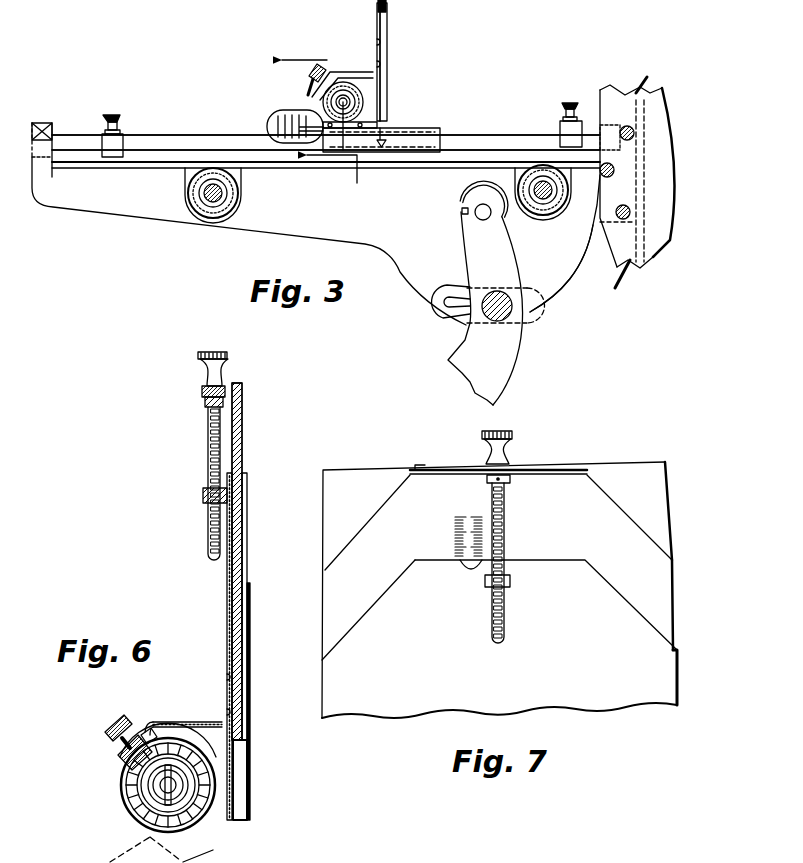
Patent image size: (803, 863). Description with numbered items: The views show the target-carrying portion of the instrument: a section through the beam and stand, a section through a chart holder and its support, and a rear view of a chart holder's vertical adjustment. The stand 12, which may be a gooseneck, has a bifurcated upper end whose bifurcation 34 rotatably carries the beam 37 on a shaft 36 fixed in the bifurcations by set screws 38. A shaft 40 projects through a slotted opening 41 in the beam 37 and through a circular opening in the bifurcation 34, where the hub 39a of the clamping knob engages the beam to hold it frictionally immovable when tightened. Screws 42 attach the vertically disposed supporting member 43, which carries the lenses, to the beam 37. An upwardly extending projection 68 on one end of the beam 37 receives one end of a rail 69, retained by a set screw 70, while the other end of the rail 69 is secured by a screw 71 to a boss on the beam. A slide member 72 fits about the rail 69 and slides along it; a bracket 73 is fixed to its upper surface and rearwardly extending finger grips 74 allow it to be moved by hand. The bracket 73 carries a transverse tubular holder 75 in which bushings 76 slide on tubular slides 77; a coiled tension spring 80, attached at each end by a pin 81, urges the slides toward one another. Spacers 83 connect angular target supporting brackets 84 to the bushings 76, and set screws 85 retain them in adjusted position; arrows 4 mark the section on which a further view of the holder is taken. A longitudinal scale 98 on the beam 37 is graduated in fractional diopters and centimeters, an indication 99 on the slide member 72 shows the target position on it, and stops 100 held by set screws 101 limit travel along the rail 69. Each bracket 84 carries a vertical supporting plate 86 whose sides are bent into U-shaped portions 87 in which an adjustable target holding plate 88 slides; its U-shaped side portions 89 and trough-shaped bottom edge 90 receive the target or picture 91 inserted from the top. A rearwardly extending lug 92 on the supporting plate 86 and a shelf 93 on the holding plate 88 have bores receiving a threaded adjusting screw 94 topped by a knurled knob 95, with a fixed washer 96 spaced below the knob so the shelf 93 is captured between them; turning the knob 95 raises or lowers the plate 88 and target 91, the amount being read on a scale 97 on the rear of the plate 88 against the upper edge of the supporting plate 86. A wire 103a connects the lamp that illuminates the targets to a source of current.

In FIG. 3, the section line 4- 4 is at (323, 123).
In FIG. 3, the stand 12 is at (514, 378).
In FIG. 6, the stand 12 is at (213, 852).
In FIG. 3, the bifurcation 34 is at (507, 250).
In FIG. 3, the shaft 36 is at (482, 217).
In FIG. 3, the beam 37 is at (292, 222).
In FIG. 3, the set screws 38 is at (463, 210).
In FIG. 3, the hub 39a is at (507, 298).
In FIG. 3, the shaft 40 is at (498, 290).
In FIG. 3, the slotted opening 41 is at (442, 295).
In FIG. 3, the screws 42 is at (630, 208).
In FIG. 3, the supporting member 43 is at (670, 244).
In FIG. 3, the projection 68 is at (53, 124).
In FIG. 3, the rail 69 is at (488, 128).
In FIG. 3, the set screw 70 is at (37, 121).
In FIG. 3, the screw 71 is at (610, 120).
In FIG. 3, the slide member 72 is at (433, 130).
In FIG. 3, the bracket 73 is at (363, 117).
In FIG. 3, the finger grips 74 is at (272, 113).
In FIG. 3, the tubular holder 75 is at (358, 90).
In FIG. 6, the bushings 76 is at (186, 743).
In FIG. 6, the tubular slides 77 is at (150, 782).
In FIG. 6, the coiled tension spring 80 is at (155, 790).
In FIG. 6, the pin 81 is at (158, 800).
In FIG. 6, the spacers 83 is at (153, 730).
In FIG. 3, the target supporting brackets 84 is at (352, 67).
In FIG. 6, the target supporting brackets 84 is at (143, 733).
In FIG. 3, the set screws 85 is at (308, 72).
In FIG. 6, the set screws 85 is at (112, 723).
In FIG. 3, the vertical supporting plates 86 is at (373, 7).
In FIG. 6, the vertical supporting plates 86 is at (227, 637).
In FIG. 7, the vertical supporting plates 86 is at (610, 706).
In FIG. 3, the U-shaped portions 87 is at (383, 50).
In FIG. 6, the U-shaped portions 87 is at (253, 820).
In FIG. 7, the U-shaped portions 87 is at (680, 678).
In FIG. 6, the target holding plates 88 is at (233, 427).
In FIG. 7, the target holding plates 88 is at (605, 507).
In FIG. 3, the U-shaped side portions 89 is at (385, 7).
In FIG. 6, the U-shaped side portions 89 is at (242, 558).
In FIG. 7, the U-shaped side portions 89 is at (675, 585).
In FIG. 6, the trough-shaped bottom edges 90 is at (248, 747).
In FIG. 6, the targets 91 is at (242, 418).
In FIG. 7, the targets 91 is at (333, 492).
In FIG. 6, the lugs 92 is at (203, 497).
In FIG. 7, the lugs 92 is at (512, 582).
In FIG. 6, the shelf 93 is at (202, 391).
In FIG. 7, the shelf 93 is at (543, 469).
In FIG. 6, the threaded adjusting screw 94 is at (208, 427).
In FIG. 7, the threaded adjusting screw 94 is at (507, 517).
In FIG. 6, the knurled knob 95 is at (227, 355).
In FIG. 7, the knurled knob 95 is at (490, 428).
In FIG. 6, the fixed washer 96 is at (205, 403).
In FIG. 7, the fixed washer 96 is at (511, 480).
In FIG. 7, the scale 97 is at (455, 536).
In FIG. 3, the longitudinal scale 98 is at (130, 169).
In FIG. 3, the indication 99 is at (384, 141).
In FIG. 3, the stops 100 is at (124, 143).
In FIG. 3, the set screws 101 is at (118, 115).
In FIG. 3, the wire 103a is at (620, 282).